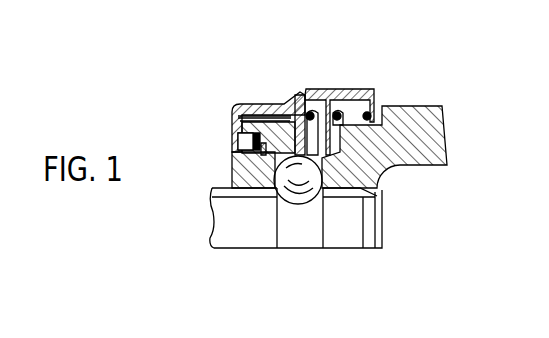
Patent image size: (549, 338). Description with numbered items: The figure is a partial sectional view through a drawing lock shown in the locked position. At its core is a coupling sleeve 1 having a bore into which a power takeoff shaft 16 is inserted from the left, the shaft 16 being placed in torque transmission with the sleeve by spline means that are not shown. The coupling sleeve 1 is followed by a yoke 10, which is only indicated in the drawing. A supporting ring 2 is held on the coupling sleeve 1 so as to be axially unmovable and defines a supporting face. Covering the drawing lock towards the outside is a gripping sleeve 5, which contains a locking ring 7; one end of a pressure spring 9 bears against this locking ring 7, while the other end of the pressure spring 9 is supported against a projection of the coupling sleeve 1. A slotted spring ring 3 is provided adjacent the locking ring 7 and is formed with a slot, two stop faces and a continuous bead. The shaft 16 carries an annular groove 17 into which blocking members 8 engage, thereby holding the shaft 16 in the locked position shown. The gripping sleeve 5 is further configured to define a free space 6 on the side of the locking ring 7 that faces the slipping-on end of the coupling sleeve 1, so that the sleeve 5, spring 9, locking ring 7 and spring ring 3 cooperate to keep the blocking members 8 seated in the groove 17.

The coupling sleeve 1 is at (233, 170).
The supporting ring 2 is at (232, 118).
The slotted spring ring 3 is at (253, 109).
The gripping sleeve 5 is at (317, 92).
The free space 6 is at (272, 112).
The locking ring 7 is at (299, 110).
The blocking members 8 is at (297, 183).
The pressure spring 9 is at (366, 112).
The yoke 10 is at (422, 137).
The power takeoff shaft 16 is at (348, 217).
The annular groove 17 is at (310, 228).